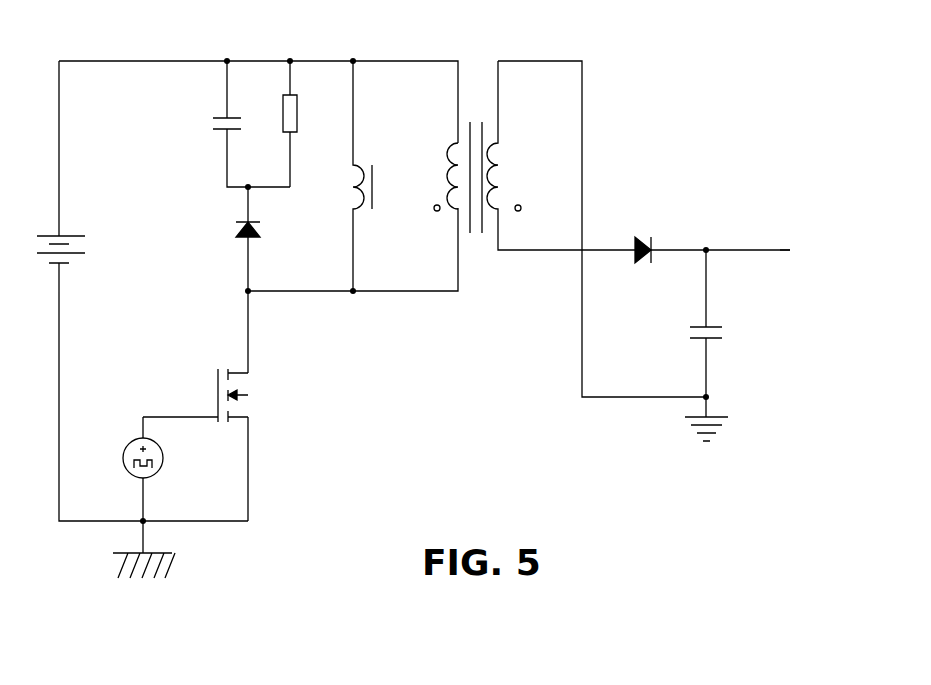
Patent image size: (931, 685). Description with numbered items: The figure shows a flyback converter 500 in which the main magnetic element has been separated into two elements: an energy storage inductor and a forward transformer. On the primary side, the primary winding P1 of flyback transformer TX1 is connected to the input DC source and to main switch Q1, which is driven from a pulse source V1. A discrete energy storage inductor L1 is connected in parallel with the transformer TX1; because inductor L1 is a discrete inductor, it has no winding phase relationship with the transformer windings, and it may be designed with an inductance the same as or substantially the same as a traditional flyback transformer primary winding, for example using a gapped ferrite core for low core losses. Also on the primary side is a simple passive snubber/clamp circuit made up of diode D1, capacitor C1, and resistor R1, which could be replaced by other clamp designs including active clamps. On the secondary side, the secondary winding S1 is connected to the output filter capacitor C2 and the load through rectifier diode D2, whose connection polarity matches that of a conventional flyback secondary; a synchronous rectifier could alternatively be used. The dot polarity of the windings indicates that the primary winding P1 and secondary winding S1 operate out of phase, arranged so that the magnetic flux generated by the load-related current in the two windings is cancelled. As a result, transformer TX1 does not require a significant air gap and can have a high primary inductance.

The flyback converter with separated magnetic elements 500 is at (682, 73).
The capacitor C1 is at (251, 124).
The resistor R1 is at (298, 124).
The diode D1 is at (234, 280).
The energy storage inductor L1 is at (371, 176).
The main switch Q1 is at (195, 406).
The pulse voltage source V1 is at (133, 497).
The flyback transformer TX1 is at (564, 229).
The primary winding P1 is at (440, 177).
The secondary winding S1 is at (596, 229).
The rectifier diode D2 is at (710, 240).
The output filter capacitor C2 is at (712, 345).